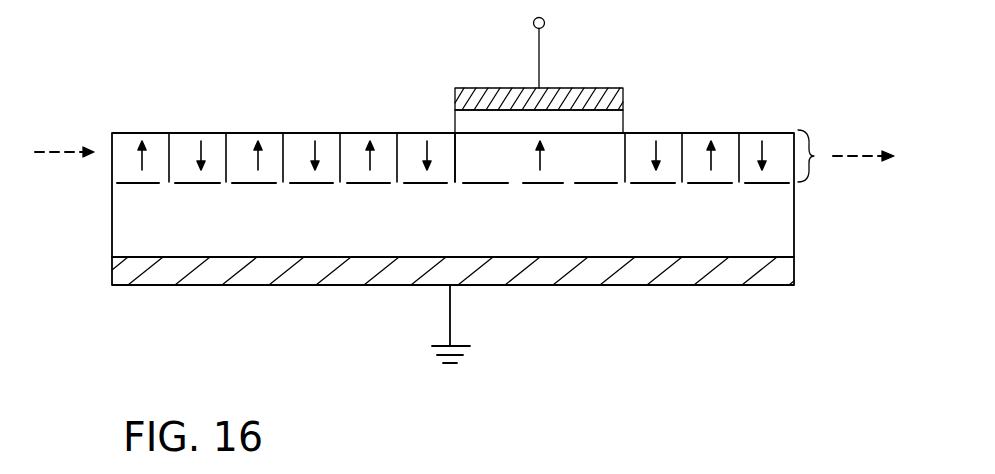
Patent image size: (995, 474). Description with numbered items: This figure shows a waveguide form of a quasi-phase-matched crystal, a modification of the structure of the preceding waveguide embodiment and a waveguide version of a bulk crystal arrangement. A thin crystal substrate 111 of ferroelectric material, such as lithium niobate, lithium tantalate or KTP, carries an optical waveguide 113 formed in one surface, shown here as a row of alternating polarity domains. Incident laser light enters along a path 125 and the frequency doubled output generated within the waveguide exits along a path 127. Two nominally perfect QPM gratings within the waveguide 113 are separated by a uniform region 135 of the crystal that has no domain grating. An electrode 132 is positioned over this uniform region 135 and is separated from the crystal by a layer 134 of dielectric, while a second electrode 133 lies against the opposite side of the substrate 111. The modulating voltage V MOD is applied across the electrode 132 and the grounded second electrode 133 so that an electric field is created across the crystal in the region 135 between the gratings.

The crystal substrate 111 is at (108, 130).
The optical waveguide channel 113 is at (824, 146).
The incident light path 125 is at (70, 150).
The output path 127 is at (848, 160).
The electrode 132 is at (615, 99).
The second electrode 133 is at (678, 277).
The dielectric layer 134 is at (613, 119).
The uniform crystal region 135 is at (476, 150).